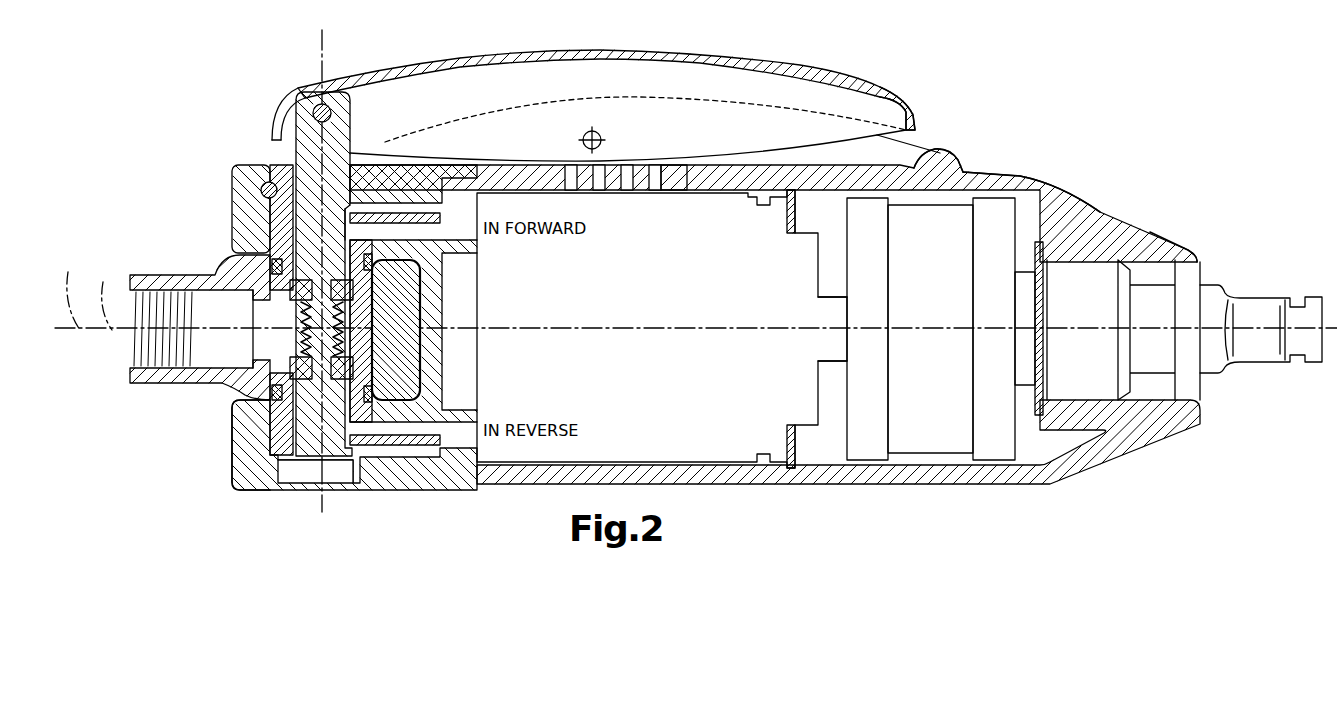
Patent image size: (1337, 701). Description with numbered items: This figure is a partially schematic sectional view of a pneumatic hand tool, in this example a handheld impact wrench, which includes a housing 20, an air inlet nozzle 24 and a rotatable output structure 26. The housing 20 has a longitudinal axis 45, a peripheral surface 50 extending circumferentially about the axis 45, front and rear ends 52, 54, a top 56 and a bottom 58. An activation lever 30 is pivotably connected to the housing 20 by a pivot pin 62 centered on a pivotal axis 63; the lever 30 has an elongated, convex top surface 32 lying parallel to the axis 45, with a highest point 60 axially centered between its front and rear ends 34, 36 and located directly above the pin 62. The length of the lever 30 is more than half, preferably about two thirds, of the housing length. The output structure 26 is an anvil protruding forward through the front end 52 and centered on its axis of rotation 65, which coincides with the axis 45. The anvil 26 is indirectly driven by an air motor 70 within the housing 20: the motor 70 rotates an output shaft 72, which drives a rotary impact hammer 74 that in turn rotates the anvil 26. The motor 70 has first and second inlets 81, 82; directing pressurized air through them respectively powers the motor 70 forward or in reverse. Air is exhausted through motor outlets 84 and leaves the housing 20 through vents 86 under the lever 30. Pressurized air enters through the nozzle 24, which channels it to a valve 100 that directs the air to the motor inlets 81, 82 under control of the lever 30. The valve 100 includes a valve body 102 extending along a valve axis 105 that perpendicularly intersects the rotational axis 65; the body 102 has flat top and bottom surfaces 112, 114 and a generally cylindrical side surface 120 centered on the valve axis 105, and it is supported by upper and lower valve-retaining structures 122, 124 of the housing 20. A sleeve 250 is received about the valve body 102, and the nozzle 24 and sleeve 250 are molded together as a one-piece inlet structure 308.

The housing 20 is at (793, 256).
The air inlet nozzle 24 is at (160, 275).
The rotatable output structure 26 is at (1250, 297).
The activation lever 30 is at (626, 90).
The top surface 32 is at (542, 56).
The front end 34 is at (906, 92).
The rear end 36 is at (285, 90).
The longitudinal axis 45 is at (107, 294).
The peripheral surface 50 is at (1023, 176).
The front end 52 is at (1203, 250).
The rear end 54 is at (232, 186).
The top 56 is at (948, 153).
The bottom 58 is at (955, 486).
The highest point 60 is at (594, 54).
The pivot pin 62 is at (586, 135).
The pivotal axis 63 is at (603, 138).
The axis of rotation 65 is at (75, 289).
The air motor 70 is at (662, 329).
The output shaft 72 is at (352, 128).
The rotary impact hammer 74 is at (1011, 329).
The first inlet 81 is at (462, 231).
The second inlet 82 is at (462, 431).
The motor outlets 84 is at (568, 194).
The vents 86 is at (650, 195).
The valve 100 is at (265, 138).
The valve body 102 is at (283, 163).
The valve axis 105 is at (345, 40).
The top surface 112 is at (287, 168).
The bottom surface 114 is at (280, 483).
The side surface 120 is at (317, 451).
The upper valve-retaining structure 122 is at (232, 212).
The lower valve-retaining structure 124 is at (235, 430).
The sleeve 250 is at (213, 269).
The inlet structure 308 is at (173, 279).